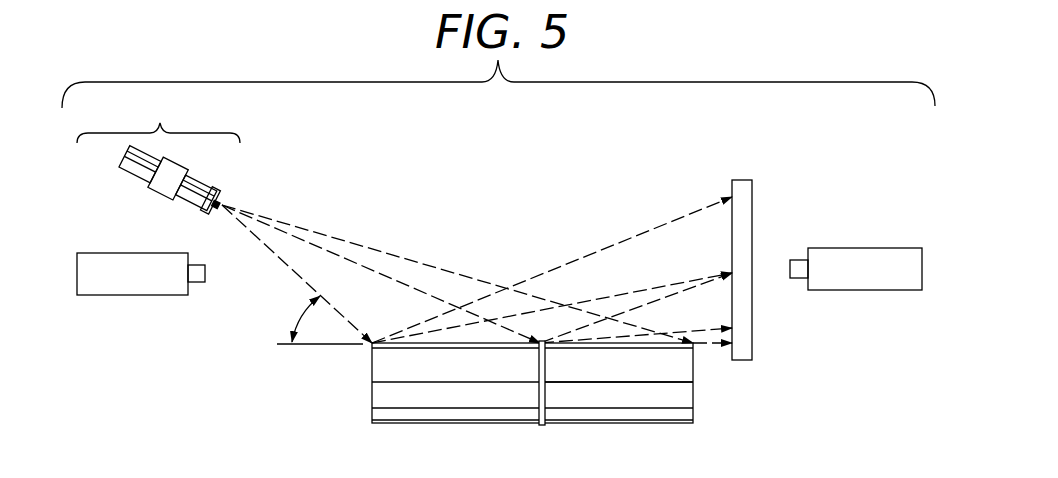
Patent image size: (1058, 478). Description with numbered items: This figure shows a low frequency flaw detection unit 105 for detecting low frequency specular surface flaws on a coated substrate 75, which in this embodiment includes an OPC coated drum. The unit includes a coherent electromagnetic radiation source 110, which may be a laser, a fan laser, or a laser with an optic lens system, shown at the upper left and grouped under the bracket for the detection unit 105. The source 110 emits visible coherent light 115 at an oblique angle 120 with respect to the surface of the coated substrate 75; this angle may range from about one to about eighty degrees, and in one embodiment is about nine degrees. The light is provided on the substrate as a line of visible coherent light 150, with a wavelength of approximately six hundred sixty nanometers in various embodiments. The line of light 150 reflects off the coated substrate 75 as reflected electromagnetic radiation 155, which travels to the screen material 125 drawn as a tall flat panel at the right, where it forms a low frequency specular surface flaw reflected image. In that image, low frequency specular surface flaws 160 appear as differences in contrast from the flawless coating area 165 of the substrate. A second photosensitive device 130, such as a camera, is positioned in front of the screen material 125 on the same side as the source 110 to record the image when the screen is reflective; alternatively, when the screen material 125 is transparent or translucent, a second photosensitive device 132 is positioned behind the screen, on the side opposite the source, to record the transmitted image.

The coated substrate 75 is at (380, 373).
The low frequency flaw detection unit 105 is at (158, 157).
The coherent electromagnetic radiation source 110 is at (118, 162).
The visible coherent light 115 is at (226, 187).
The oblique angle 120 is at (320, 320).
The screen material 125 is at (743, 227).
The second photosensitive device 130 is at (130, 285).
The second photosensitive device 132 is at (833, 280).
The line of visible coherent light 150 is at (437, 341).
The reflected electromagnetic radiation 155 is at (572, 258).
The low frequency specular surface flaws 160 is at (538, 397).
The flawless coating area 165 is at (680, 370).